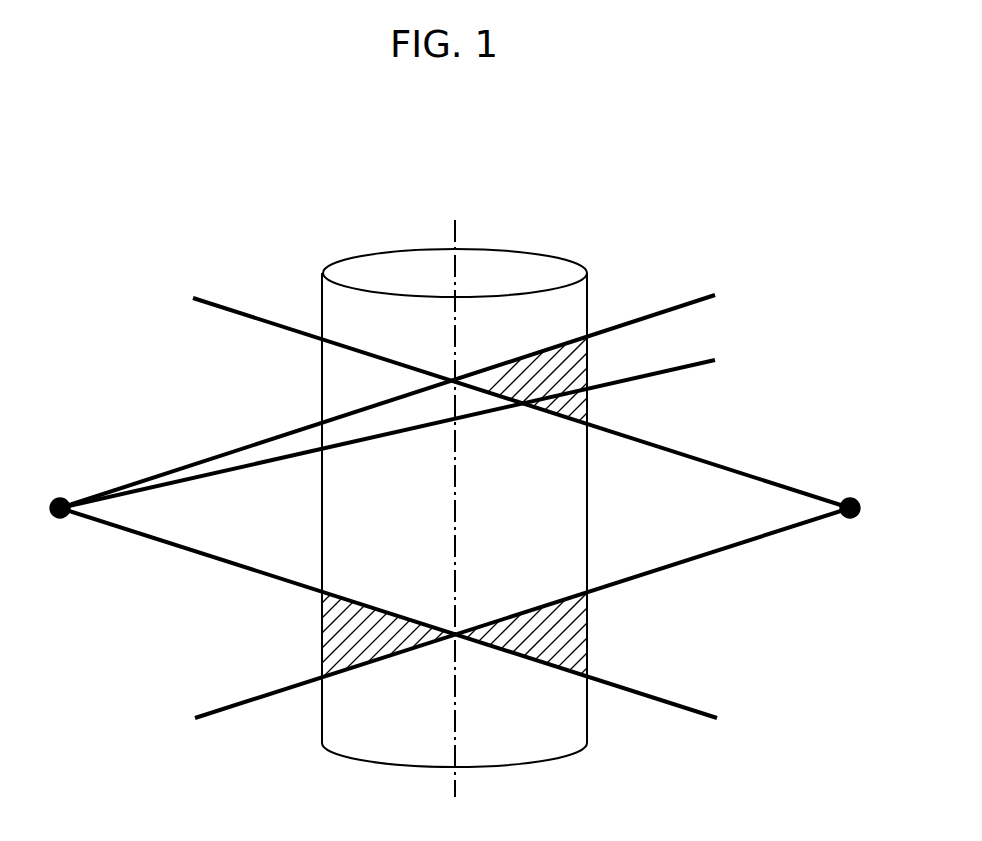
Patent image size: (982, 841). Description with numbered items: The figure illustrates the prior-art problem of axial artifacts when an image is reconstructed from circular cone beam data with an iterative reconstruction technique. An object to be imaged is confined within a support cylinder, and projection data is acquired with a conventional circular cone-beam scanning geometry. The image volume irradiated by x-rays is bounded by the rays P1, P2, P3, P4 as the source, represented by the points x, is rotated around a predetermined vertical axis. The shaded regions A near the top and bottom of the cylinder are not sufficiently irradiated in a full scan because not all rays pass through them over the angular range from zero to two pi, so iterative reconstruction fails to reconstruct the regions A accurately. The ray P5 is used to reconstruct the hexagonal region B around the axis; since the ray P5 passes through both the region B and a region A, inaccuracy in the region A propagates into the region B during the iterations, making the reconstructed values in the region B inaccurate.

The ray P1 is at (506, 391).
The ray P2 is at (405, 391).
The ray P3 is at (407, 623).
The ray P4 is at (507, 624).
The ray P5 is at (405, 423).
The shaded region A is at (570, 520).
The hexagonal region B is at (469, 508).
The point (light source / focal point) x is at (454, 501).